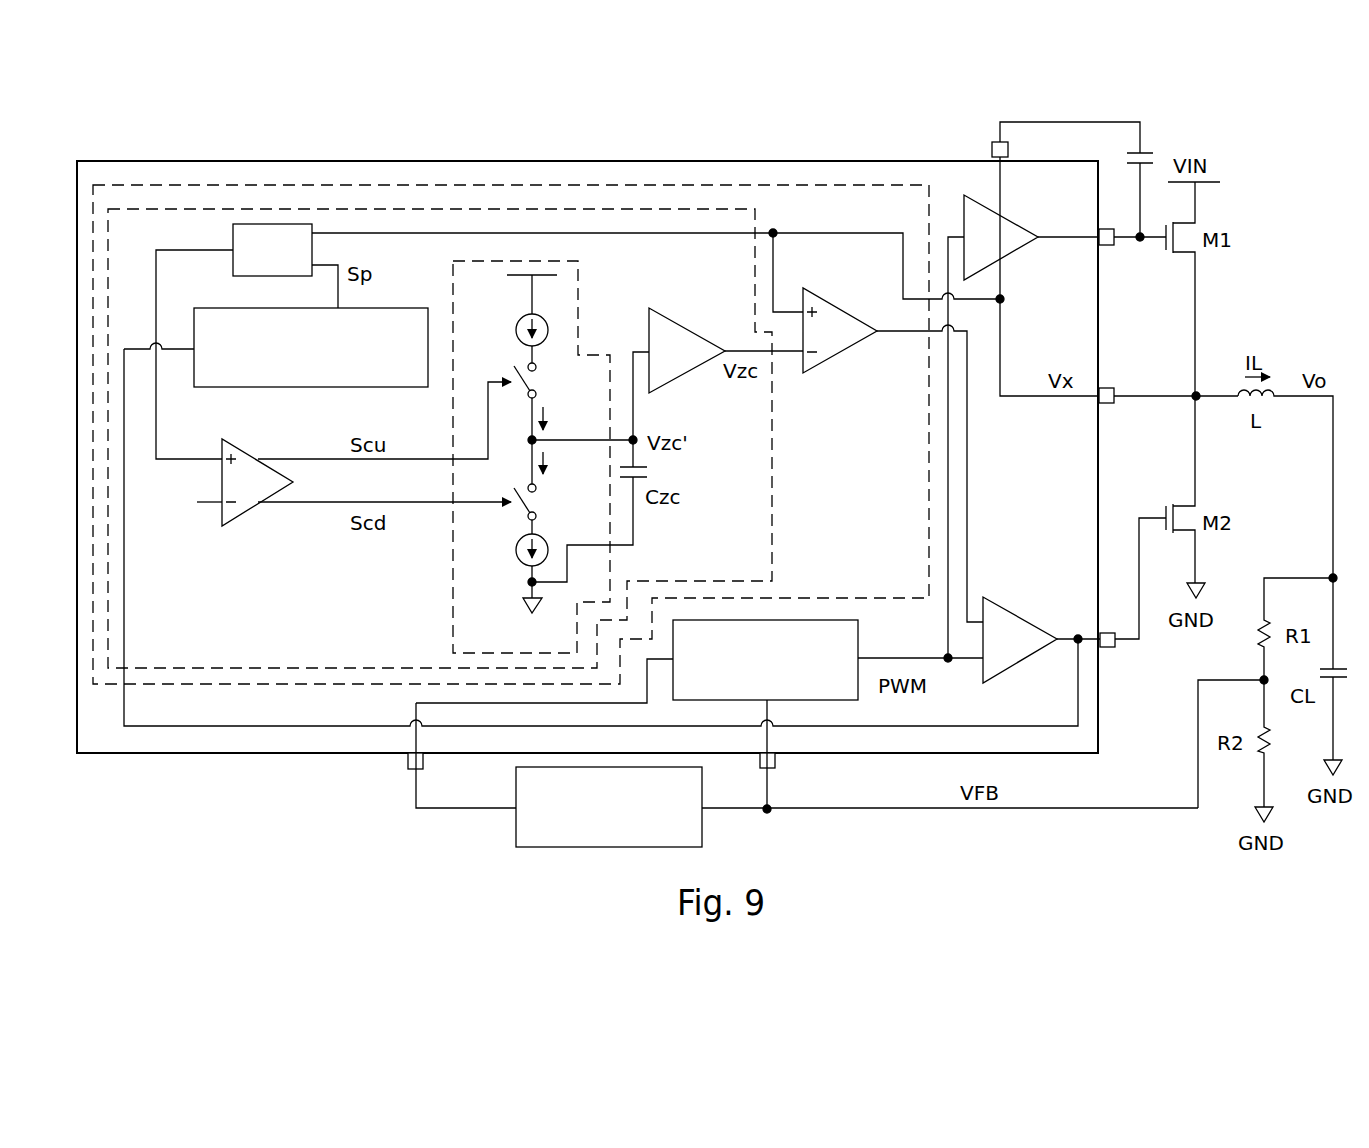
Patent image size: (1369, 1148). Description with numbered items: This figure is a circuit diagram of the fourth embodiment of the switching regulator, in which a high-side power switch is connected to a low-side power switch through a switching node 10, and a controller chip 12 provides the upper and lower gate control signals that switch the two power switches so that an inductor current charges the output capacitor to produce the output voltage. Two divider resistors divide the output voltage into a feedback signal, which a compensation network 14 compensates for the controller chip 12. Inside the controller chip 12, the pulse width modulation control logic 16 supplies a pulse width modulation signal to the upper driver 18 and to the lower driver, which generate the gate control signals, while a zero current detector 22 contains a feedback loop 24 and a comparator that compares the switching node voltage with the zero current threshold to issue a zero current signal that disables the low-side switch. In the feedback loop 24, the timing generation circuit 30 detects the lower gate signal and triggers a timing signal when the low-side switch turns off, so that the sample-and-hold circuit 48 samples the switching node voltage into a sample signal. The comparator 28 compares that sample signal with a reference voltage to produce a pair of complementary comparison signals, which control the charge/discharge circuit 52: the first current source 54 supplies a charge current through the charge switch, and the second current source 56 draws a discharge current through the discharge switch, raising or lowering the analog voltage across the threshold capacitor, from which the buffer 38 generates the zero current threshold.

The switching node 10 is at (1192, 393).
The controller chip 12 is at (207, 753).
The compensation network 14 is at (605, 848).
The pulse width modulation control logic 16 is at (837, 620).
The driver 18 is at (1017, 250).
The zero current detector 22 is at (205, 687).
The feedback loop 24 is at (290, 668).
The comparator 28 is at (243, 515).
The timing generation circuit 30 is at (300, 387).
The buffer 38 is at (688, 327).
The sample-and-hold circuit 48 is at (233, 254).
The charge/discharge circuit 52 is at (580, 285).
The first current source 54 is at (522, 325).
The second current source 56 is at (517, 550).